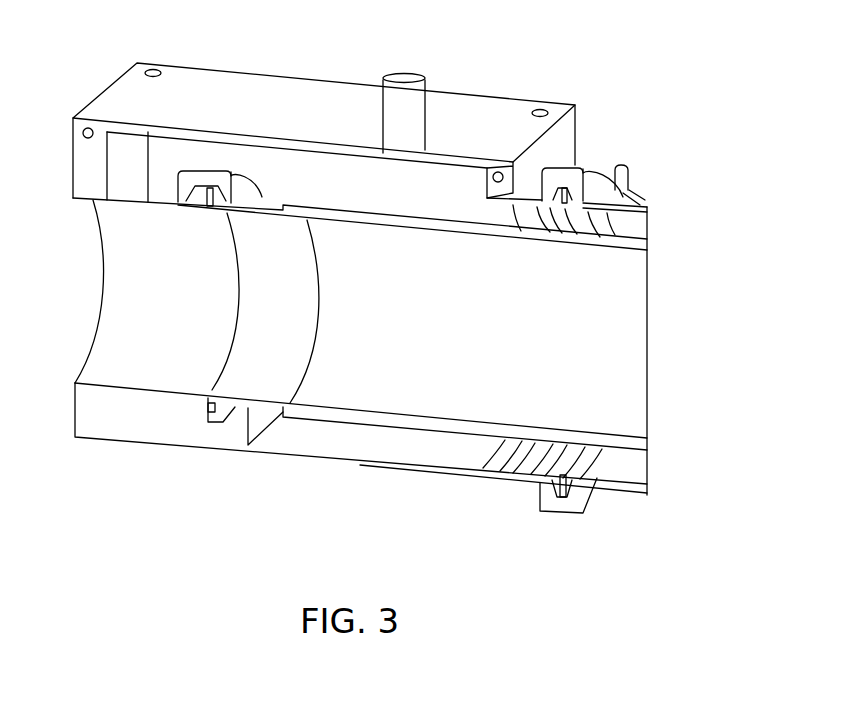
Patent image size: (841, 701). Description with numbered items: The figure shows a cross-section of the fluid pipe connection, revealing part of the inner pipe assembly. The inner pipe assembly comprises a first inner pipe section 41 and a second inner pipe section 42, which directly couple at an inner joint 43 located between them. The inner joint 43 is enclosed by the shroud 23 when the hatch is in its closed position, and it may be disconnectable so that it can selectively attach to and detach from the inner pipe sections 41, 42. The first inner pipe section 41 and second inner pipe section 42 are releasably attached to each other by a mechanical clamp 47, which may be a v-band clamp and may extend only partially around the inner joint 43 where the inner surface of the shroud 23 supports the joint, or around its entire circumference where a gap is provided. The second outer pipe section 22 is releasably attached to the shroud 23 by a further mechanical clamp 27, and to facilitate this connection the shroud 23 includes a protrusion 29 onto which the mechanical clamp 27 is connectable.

The second outer pipe section 22 is at (632, 226).
The shroud 23 is at (473, 113).
The mechanical clamp 27 is at (590, 167).
The protrusion 29 is at (528, 467).
The first inner pipe section 41 is at (150, 333).
The second inner pipe section 42 is at (425, 250).
The inner joint 43 is at (240, 353).
The mechanical clamp 47 is at (178, 178).